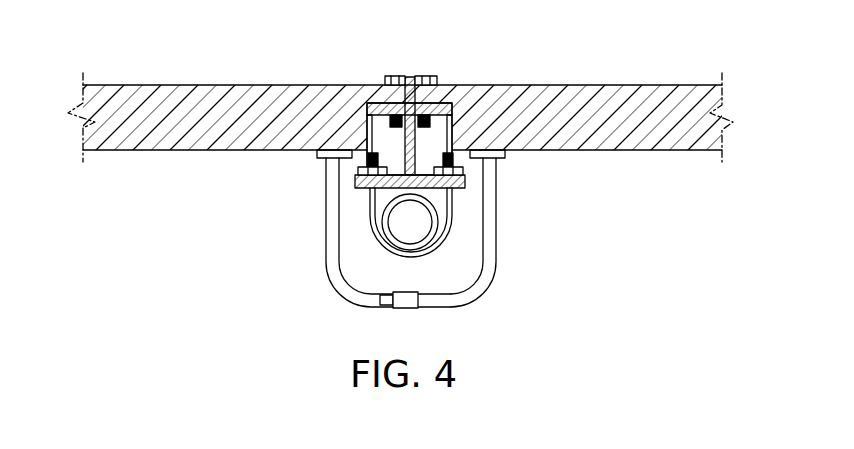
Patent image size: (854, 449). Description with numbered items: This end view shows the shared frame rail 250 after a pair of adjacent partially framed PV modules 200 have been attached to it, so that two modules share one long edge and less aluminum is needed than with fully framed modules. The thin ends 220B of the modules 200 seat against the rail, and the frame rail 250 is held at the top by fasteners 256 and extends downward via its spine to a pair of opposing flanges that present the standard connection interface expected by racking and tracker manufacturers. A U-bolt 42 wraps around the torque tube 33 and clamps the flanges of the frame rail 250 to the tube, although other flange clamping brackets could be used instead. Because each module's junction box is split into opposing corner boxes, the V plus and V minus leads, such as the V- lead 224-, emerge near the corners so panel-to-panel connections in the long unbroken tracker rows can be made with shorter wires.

The partially framed PV module 200 is at (173, 57).
The thin end 220B is at (193, 136).
The shared frame rail 250 is at (416, 143).
The nuts 256 is at (383, 65).
The U-bolt 42 is at (372, 208).
The torque tube 33 is at (437, 228).
The V- lead 224- is at (497, 228).